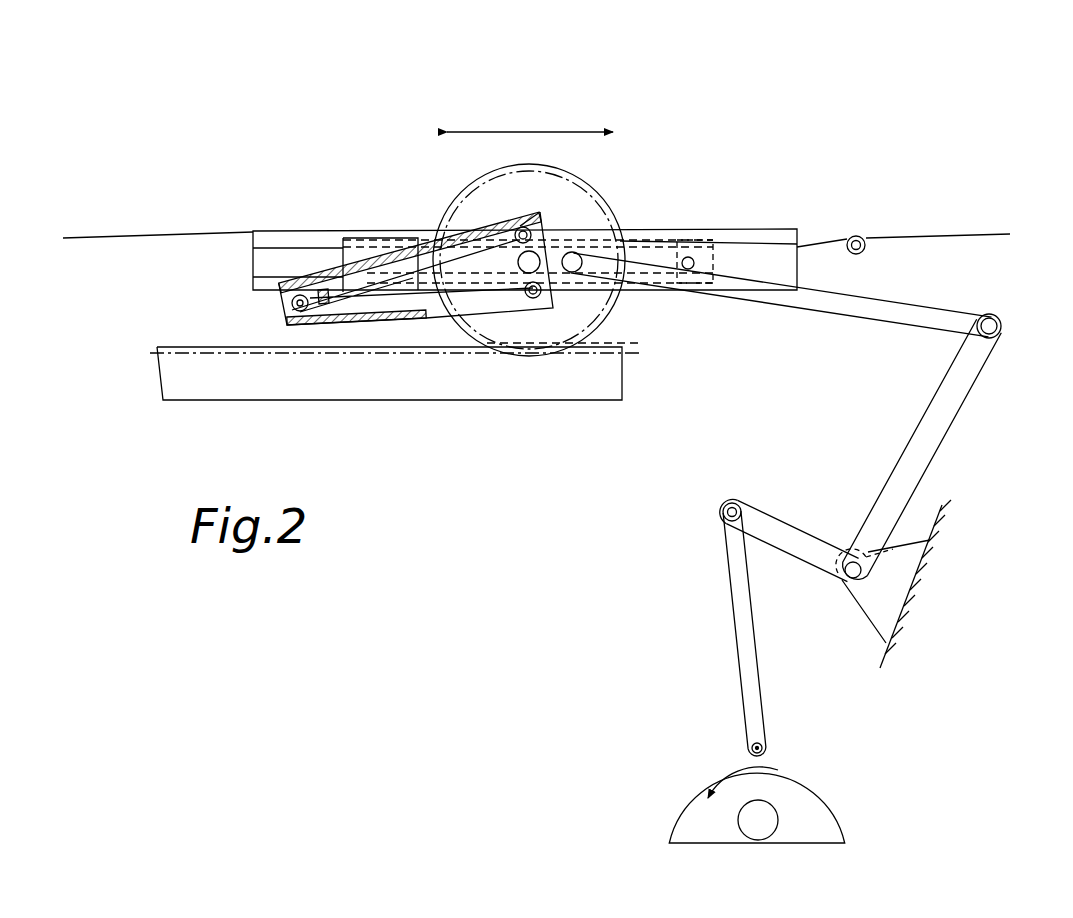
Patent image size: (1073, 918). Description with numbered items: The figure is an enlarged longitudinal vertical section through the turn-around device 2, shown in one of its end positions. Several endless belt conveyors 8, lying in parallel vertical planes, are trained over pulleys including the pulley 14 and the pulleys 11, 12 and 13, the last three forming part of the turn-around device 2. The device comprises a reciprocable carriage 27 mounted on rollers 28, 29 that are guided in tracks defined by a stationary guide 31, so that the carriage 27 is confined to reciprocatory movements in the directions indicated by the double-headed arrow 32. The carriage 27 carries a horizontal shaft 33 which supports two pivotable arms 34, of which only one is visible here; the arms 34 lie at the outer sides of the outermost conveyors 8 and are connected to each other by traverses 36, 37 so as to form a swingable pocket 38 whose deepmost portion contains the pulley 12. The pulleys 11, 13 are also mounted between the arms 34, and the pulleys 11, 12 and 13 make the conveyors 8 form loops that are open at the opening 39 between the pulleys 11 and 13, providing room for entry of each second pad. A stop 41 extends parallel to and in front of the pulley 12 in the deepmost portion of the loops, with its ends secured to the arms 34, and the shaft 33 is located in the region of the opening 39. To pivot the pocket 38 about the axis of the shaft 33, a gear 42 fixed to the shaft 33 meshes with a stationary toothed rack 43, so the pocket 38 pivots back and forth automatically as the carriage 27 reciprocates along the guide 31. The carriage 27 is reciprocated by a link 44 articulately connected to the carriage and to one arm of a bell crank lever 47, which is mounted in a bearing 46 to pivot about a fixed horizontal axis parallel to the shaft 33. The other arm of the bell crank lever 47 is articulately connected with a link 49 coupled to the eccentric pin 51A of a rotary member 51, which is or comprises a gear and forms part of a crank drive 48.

The turn-around device 2 is at (698, 139).
The belt conveyors 8 is at (168, 236).
The pulley 11 is at (532, 222).
The pulley 12 is at (290, 302).
The pulley 13 is at (536, 300).
The pulley 14 is at (866, 247).
The carriage 27 is at (648, 238).
The roller 28 is at (347, 262).
The roller 29 is at (688, 250).
The stationary guide 31 is at (733, 237).
The double-headed arrow 32 is at (545, 131).
The horizontal shaft 33 is at (583, 216).
The pivotable arm 34 is at (458, 232).
The traverse 36 is at (330, 268).
The traverse 37 is at (359, 323).
The swingable pocket 38 is at (404, 210).
The opening 39 is at (537, 255).
The stop 41 is at (334, 307).
The gear 42 is at (493, 170).
The toothed rack 43 is at (434, 348).
The link 44 is at (813, 310).
The bearing 46 is at (862, 603).
The bell crank lever 47 is at (800, 540).
The crank drive 48 is at (626, 690).
The link 49 is at (748, 622).
The rotary member 51 is at (712, 750).
The eccentric pin 51A is at (770, 742).